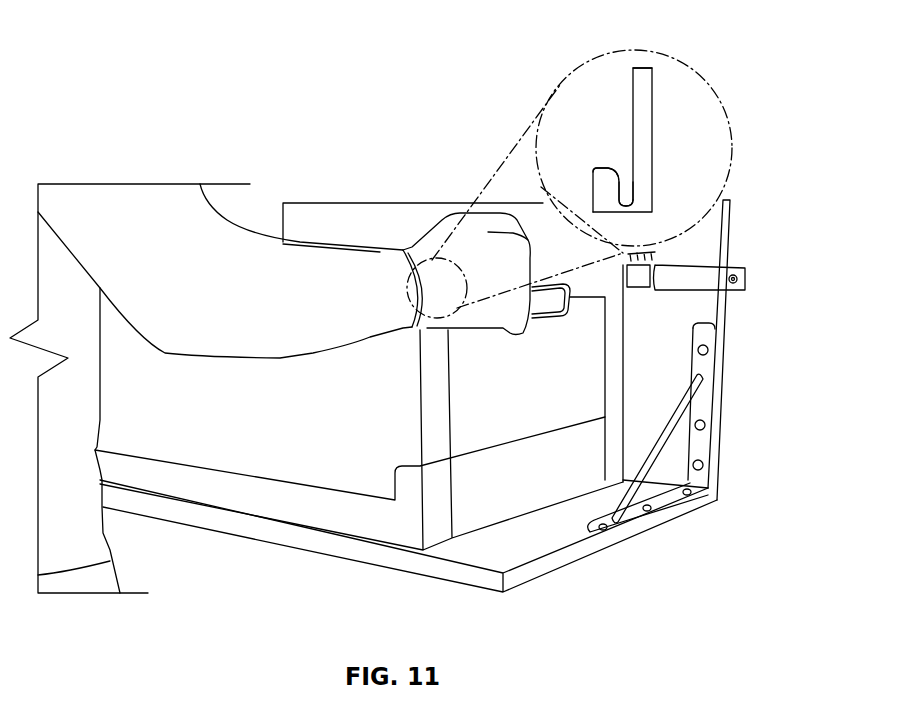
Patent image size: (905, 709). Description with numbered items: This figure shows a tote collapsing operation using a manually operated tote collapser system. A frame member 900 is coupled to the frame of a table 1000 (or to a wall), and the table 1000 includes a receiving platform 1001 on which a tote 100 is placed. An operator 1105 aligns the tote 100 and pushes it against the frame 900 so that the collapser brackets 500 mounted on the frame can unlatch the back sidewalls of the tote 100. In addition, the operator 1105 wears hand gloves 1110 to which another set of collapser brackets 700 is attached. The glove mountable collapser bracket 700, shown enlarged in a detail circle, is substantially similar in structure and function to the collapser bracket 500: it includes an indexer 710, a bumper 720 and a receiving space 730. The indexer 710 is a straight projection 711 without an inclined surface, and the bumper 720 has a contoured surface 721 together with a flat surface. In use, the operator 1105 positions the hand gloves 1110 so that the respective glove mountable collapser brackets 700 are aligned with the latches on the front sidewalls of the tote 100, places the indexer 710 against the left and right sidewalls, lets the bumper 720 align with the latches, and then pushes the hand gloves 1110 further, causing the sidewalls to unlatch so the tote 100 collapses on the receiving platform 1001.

The table 1000 is at (82, 130).
The operator 1105 is at (190, 208).
The hand gloves 1110 is at (450, 223).
The tote 100 is at (620, 441).
The receiving platform 1001 is at (528, 573).
The collapser bracket 500 is at (714, 270).
The frame member 900 is at (736, 300).
The glove mountable collapser bracket 700 is at (582, 156).
The indexer 710 is at (630, 60).
The straight projection 711 is at (634, 72).
The bumper 720 is at (586, 184).
The contoured surface 721 is at (602, 168).
The receiving space 730 is at (627, 163).